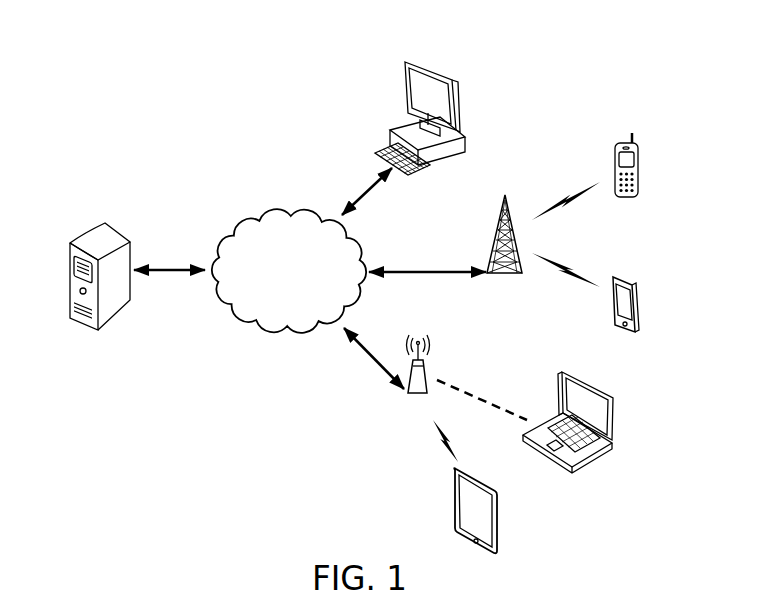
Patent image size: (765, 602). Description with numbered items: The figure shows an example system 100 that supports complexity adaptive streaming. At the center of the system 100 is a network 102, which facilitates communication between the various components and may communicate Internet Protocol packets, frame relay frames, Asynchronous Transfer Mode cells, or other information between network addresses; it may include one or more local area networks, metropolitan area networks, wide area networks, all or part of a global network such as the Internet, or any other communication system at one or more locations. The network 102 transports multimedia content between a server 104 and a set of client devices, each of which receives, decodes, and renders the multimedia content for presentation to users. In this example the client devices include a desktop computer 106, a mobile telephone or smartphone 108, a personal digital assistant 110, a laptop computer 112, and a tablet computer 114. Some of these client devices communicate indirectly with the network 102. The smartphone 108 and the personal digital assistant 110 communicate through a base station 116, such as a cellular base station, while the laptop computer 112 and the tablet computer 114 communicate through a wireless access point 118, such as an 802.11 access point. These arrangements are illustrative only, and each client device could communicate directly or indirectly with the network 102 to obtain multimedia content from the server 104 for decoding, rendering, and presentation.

The system 100 is at (108, 96).
The network 102 is at (305, 284).
The server 104 is at (88, 234).
The desktop computer 106 is at (437, 70).
The mobile telephone or smartphone 108 is at (640, 168).
The personal digital assistant (PDA) 110 is at (637, 308).
The laptop computer 112 is at (590, 460).
The tablet computer 114 is at (500, 524).
The base station 116 is at (496, 217).
The wireless access point 118 is at (427, 362).